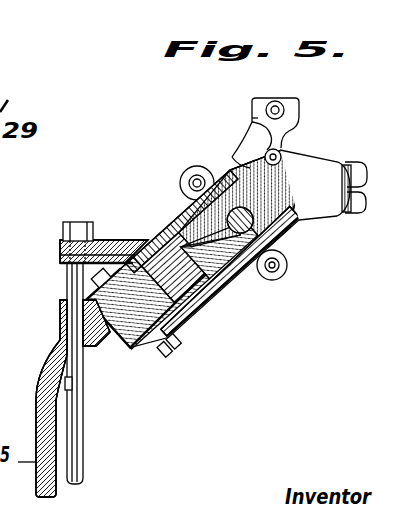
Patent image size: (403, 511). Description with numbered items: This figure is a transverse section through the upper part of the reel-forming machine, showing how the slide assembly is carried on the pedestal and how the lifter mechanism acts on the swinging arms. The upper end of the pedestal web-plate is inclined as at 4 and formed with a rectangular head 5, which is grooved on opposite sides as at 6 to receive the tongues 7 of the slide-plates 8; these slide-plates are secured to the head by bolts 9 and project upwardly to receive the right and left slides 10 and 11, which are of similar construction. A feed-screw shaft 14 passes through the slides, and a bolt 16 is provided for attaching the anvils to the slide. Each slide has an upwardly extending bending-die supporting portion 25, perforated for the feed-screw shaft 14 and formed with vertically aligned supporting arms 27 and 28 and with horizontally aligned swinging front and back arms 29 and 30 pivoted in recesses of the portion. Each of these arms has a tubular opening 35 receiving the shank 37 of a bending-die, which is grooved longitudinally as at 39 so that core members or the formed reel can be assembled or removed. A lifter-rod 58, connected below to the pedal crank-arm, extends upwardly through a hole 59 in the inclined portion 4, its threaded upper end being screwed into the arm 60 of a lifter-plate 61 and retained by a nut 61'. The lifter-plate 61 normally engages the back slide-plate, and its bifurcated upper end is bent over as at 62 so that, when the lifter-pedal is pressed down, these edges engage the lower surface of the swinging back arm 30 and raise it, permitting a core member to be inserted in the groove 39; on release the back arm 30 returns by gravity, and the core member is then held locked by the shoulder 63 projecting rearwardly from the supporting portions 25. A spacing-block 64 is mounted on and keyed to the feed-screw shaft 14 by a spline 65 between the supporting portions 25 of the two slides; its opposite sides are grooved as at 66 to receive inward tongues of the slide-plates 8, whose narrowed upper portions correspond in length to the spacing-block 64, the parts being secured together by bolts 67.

The inclined upper end of the web-plate 4 is at (108, 356).
The rectangular head 5 is at (100, 322).
The grooves 6 is at (117, 312).
The tongues 7 is at (93, 302).
The slide-plates 8 is at (105, 305).
The bolts 9 is at (165, 362).
The right slide 10 is at (233, 287).
The left slide 11 is at (148, 234).
The feed-screw shaft 14 is at (286, 254).
The bolt 16 is at (22, 192).
The bending-die supporting portion 25 is at (312, 163).
The supporting arm 27 is at (256, 104).
The supporting arm 28 is at (286, 276).
The swinging front arm 29 is at (333, 215).
The swinging back arm 30 is at (184, 170).
The tubular opening 35 is at (279, 109).
The shanks 37 is at (253, 116).
The longitudinal groove 39 is at (277, 101).
The lifter-rod 58 is at (85, 462).
The hole 59 is at (58, 388).
The arm of the lifter-plate 60 is at (62, 252).
The lifter-plate 61 is at (42, 269).
The nut 61' is at (52, 236).
The bent-over edges 62 is at (186, 212).
The shoulder 63 is at (208, 170).
The spacing-block 64 is at (266, 285).
The spline 65 is at (264, 196).
The grooves 66 is at (228, 165).
The bolts 67 is at (323, 185).